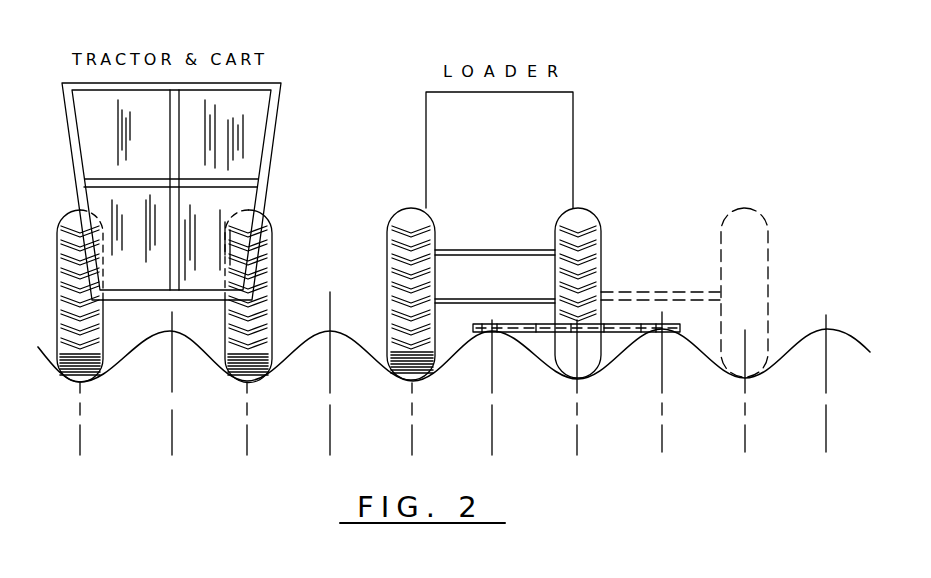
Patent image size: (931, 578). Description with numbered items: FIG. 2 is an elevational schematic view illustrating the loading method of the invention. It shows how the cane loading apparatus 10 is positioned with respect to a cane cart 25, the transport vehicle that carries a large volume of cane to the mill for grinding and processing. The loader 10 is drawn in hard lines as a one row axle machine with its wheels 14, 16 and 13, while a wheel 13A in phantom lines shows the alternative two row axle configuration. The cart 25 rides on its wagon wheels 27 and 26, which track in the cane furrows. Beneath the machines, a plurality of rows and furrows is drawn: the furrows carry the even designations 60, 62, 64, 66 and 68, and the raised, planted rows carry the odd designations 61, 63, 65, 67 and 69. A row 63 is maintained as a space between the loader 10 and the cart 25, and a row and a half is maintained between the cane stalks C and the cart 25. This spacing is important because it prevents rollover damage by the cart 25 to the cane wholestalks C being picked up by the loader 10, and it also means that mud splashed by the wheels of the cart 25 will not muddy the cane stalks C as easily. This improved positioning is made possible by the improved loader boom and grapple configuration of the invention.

The cane loading apparatus 10 is at (660, 104).
The wheel 13 is at (590, 207).
The wheel in phantom 13A is at (750, 208).
The wheel 14 is at (423, 210).
The wheel 16 is at (391, 217).
The cane wagon 25 is at (276, 138).
The wagon wheel 26 is at (270, 237).
The wagon wheel 27 is at (103, 313).
The cane stalks C is at (676, 321).
The furrow 60 is at (80, 395).
The raised/planted row 61 is at (172, 395).
The furrow 62 is at (247, 395).
The raised/planted row 63 is at (330, 395).
The furrow 64 is at (412, 395).
The raised/planted row 65 is at (492, 395).
The furrow 66 is at (577, 395).
The raised/planted row 67 is at (662, 395).
The furrow 68 is at (745, 395).
The raised/planted row 69 is at (826, 395).